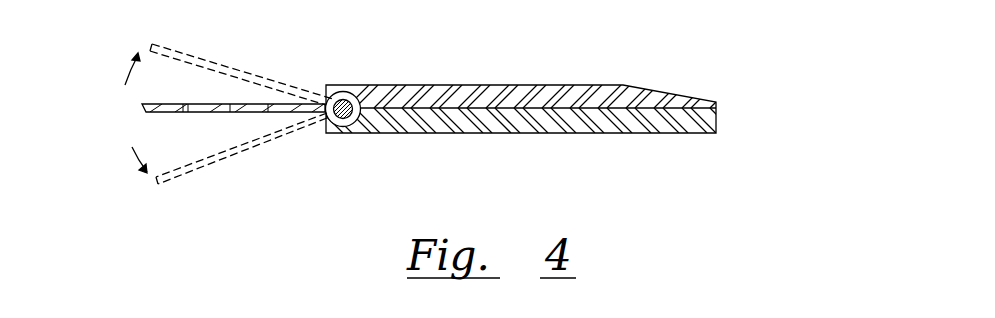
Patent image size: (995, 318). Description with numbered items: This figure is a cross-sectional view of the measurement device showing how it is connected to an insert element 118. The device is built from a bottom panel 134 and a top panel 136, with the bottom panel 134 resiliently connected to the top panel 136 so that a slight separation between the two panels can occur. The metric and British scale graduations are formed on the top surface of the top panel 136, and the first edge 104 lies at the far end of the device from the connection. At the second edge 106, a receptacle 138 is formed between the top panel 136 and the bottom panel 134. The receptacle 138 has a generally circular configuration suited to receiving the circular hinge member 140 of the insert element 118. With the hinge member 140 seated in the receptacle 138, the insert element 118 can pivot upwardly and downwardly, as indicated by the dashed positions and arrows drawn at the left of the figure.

The first edge 104 is at (558, 105).
The second edge 106 is at (321, 96).
The insert element 118 is at (157, 113).
The bottom panel 134 is at (498, 134).
The top panel 136 is at (440, 84).
The receptacle 138 is at (337, 95).
The hinge member 140 is at (341, 118).